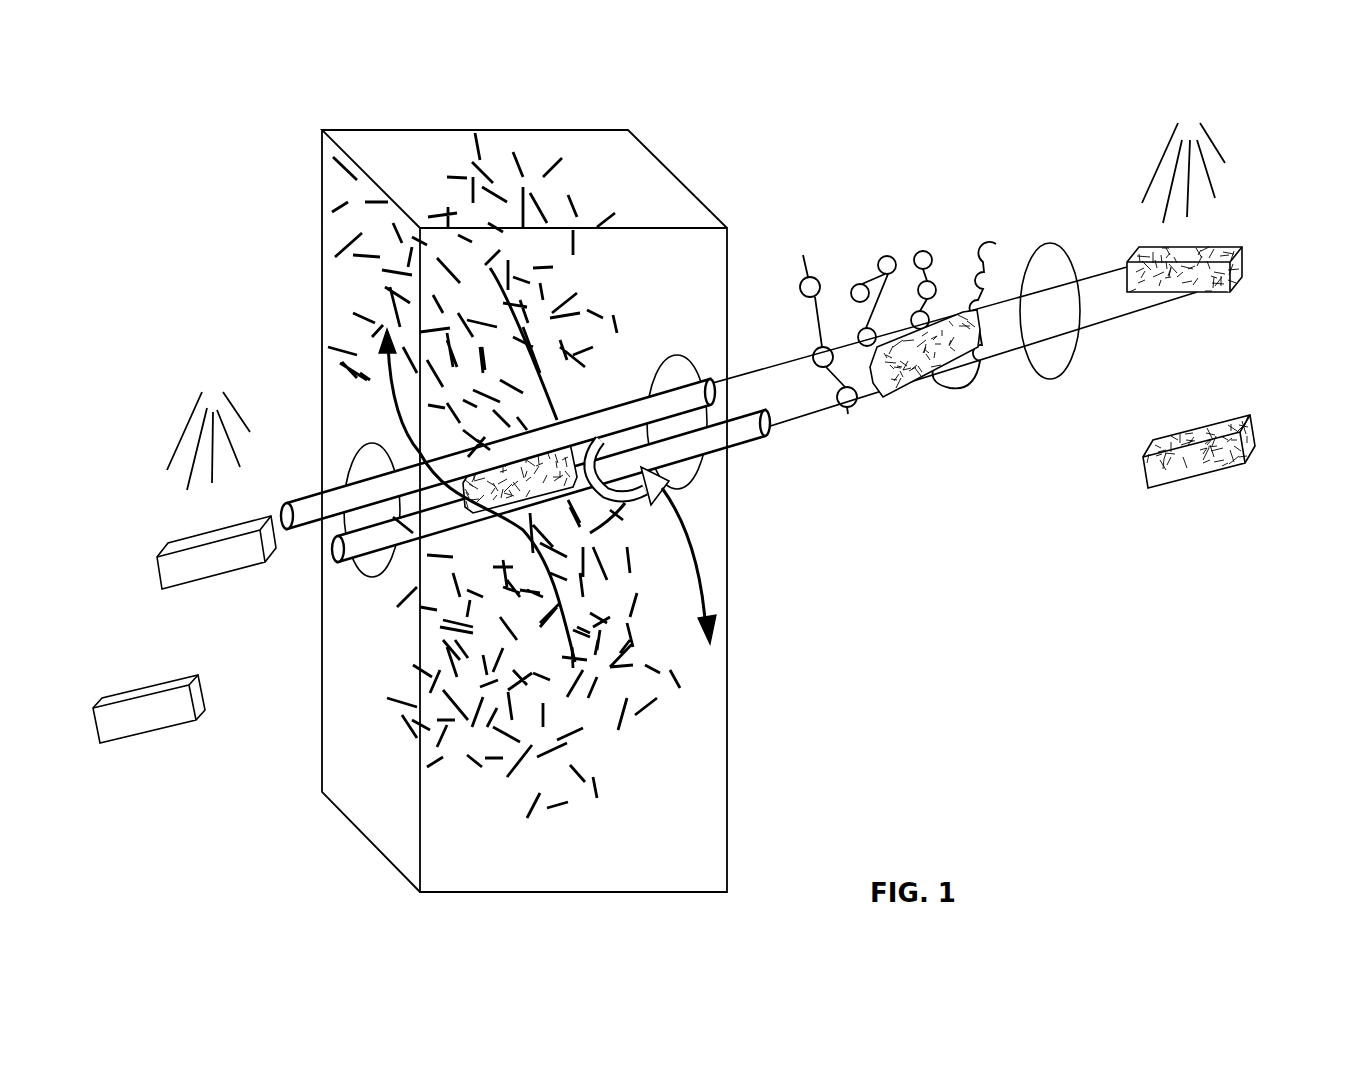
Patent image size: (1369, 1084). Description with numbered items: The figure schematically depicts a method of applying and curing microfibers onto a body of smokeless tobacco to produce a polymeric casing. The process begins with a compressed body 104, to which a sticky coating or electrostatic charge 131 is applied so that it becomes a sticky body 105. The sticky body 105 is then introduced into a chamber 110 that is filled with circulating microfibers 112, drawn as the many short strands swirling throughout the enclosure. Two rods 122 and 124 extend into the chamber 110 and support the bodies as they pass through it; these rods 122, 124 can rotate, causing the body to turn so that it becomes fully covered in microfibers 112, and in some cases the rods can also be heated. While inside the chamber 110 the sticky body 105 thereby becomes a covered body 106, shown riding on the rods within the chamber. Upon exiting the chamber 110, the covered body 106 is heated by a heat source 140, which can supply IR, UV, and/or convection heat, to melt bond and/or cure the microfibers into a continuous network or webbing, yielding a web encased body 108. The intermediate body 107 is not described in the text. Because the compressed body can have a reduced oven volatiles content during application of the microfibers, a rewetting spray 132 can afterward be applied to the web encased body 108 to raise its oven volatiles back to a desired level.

The chamber 110 is at (612, 150).
The microfibers 112 is at (572, 253).
The covered body 106 is at (565, 437).
The second sample cartridge 107 is at (917, 382).
The web encased body 108 is at (1225, 247).
The heat source 140 is at (996, 245).
The rewetting spray 132 is at (1213, 148).
The sticky coating or electrostatic charge 131 is at (158, 410).
The rod 124 is at (310, 503).
The rod 122 is at (333, 550).
The sticky body 105 is at (175, 547).
The compressed body 104 is at (202, 698).